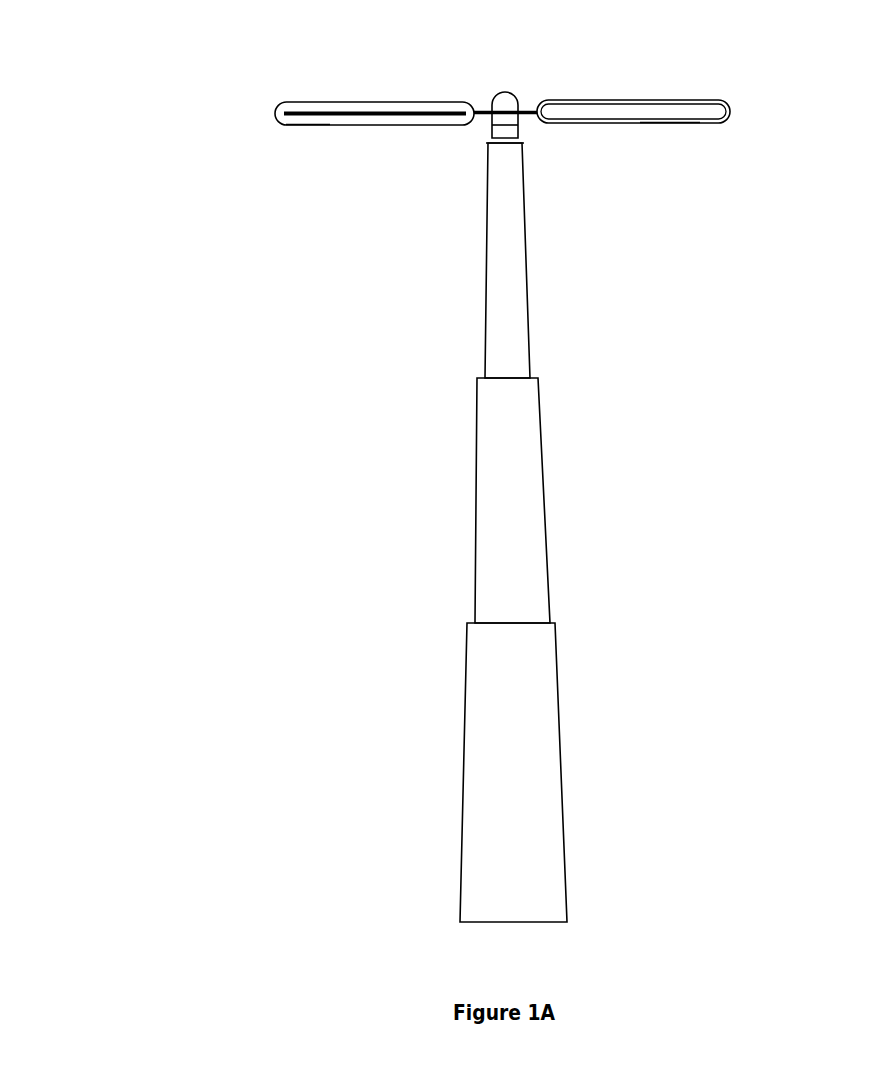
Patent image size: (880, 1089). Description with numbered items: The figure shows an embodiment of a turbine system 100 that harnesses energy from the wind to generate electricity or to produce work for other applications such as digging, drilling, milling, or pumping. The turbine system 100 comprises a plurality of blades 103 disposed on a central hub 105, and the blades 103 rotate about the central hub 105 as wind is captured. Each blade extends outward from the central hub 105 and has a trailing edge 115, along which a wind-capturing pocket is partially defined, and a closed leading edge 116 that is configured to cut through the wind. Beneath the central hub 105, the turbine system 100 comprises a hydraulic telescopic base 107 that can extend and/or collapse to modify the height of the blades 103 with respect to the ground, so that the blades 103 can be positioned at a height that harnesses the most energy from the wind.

The turbine system 100 is at (146, 107).
The blades 103 is at (366, 103).
The central hub 105 is at (498, 95).
The hydraulic telescopic base 107 is at (476, 517).
The trailing edge 115 is at (663, 125).
The leading edge 116 is at (306, 131).